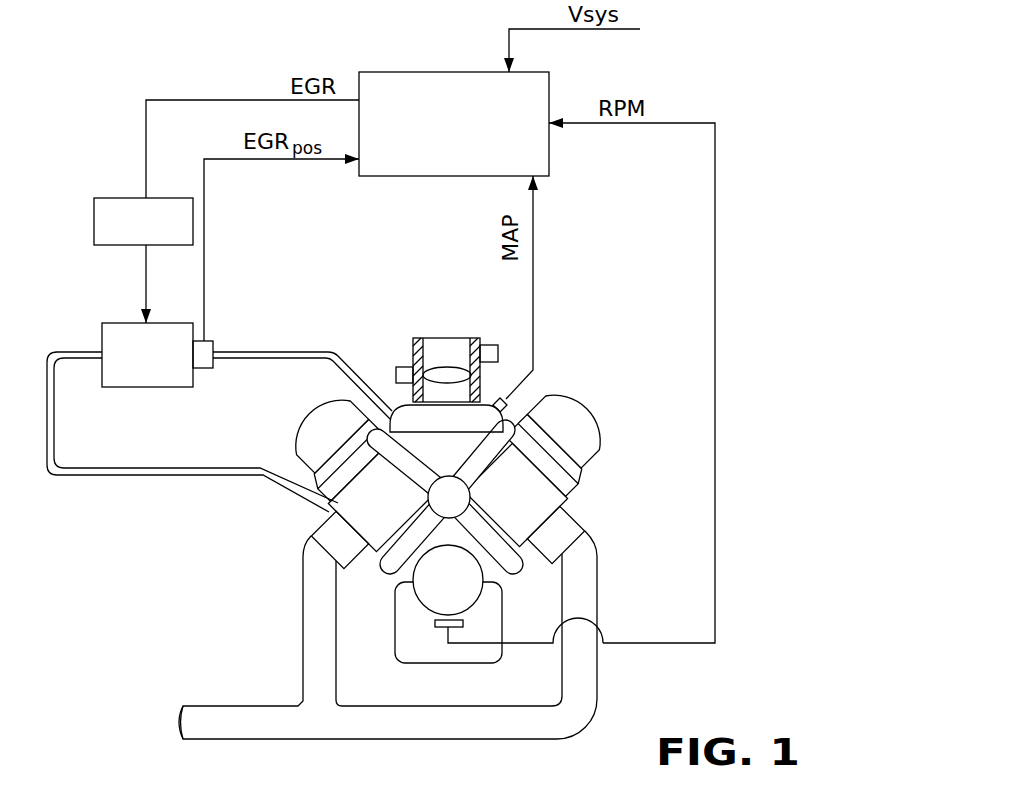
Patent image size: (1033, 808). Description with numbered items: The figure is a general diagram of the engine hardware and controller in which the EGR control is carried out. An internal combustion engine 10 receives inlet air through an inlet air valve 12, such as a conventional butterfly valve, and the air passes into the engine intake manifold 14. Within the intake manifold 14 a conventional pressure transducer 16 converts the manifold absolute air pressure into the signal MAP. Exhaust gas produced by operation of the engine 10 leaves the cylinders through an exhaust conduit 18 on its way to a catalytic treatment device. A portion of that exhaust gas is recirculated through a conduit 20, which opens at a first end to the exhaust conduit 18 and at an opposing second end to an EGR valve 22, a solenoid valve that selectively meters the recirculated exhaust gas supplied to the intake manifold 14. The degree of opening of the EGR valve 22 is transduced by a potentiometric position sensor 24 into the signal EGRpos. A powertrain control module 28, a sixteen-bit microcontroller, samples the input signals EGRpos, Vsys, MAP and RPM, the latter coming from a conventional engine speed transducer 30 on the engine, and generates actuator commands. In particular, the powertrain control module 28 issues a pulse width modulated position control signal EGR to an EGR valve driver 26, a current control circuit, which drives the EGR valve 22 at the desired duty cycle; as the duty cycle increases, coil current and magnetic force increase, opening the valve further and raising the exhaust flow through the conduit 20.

The internal combustion engine 10 is at (583, 478).
The inlet air valve 12 is at (447, 372).
The intake manifold 14 is at (481, 407).
The pressure transducer 16 is at (508, 400).
The exhaust conduit 18 is at (318, 727).
The conduit 20 is at (213, 473).
The EGR valve 22 is at (110, 330).
The position sensor 24 is at (203, 369).
The EGR valve driver 26 is at (101, 204).
The powertrain control module 28 is at (408, 68).
The engine speed transducer 30 is at (437, 628).